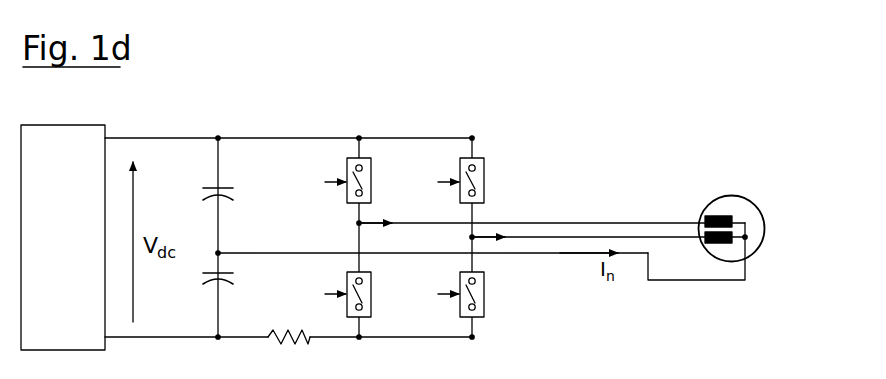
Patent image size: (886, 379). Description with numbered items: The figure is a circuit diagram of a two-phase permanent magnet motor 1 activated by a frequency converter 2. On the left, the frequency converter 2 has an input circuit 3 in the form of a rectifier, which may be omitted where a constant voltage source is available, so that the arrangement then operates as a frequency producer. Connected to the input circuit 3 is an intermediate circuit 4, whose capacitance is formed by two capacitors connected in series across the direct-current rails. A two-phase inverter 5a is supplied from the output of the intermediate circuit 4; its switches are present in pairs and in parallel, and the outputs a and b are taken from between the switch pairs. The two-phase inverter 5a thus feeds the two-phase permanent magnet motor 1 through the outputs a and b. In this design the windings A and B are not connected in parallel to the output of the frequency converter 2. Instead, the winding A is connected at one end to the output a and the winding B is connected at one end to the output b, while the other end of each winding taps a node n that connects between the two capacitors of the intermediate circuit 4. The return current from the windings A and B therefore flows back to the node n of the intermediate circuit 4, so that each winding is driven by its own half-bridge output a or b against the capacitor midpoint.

The two-phase permanent magnet motor 1 is at (779, 229).
The frequency converter 2 is at (405, 176).
The input circuit 3 is at (71, 196).
The intermediate circuit 4 is at (272, 183).
The two-phase inverter 5a is at (444, 128).
The winding A is at (723, 215).
The winding B is at (730, 243).
The node n is at (222, 256).
The output a is at (362, 222).
The output b is at (475, 236).